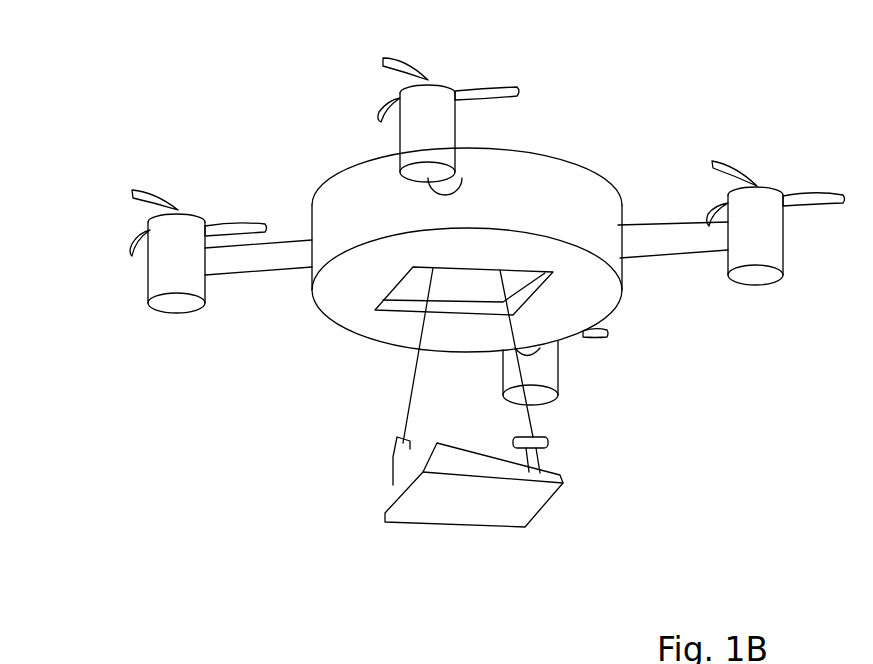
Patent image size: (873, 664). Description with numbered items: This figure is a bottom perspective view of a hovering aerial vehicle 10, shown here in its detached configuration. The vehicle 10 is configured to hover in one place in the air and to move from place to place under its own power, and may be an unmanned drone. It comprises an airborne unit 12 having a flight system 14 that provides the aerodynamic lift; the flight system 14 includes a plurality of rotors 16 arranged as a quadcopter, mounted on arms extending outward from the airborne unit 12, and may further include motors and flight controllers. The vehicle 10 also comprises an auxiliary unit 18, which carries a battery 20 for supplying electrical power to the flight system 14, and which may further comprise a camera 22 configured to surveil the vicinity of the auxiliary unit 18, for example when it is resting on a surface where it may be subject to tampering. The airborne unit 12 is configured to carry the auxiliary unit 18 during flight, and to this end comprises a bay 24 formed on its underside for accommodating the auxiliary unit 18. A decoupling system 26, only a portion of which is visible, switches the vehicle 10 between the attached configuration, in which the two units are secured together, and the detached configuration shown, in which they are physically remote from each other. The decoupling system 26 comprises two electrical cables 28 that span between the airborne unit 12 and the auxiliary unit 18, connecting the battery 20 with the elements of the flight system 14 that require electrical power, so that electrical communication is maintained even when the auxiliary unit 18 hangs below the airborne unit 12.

The hovering aerial vehicle 10 is at (437, 210).
The airborne unit 12 is at (456, 259).
The flight system 14 is at (130, 293).
The rotors 16 is at (429, 80).
The auxiliary unit 18 is at (556, 502).
The battery 20 is at (468, 460).
The camera 22 is at (548, 440).
The bay 24 is at (412, 290).
The decoupling system 26 is at (395, 386).
The electrical cables 28 is at (412, 390).